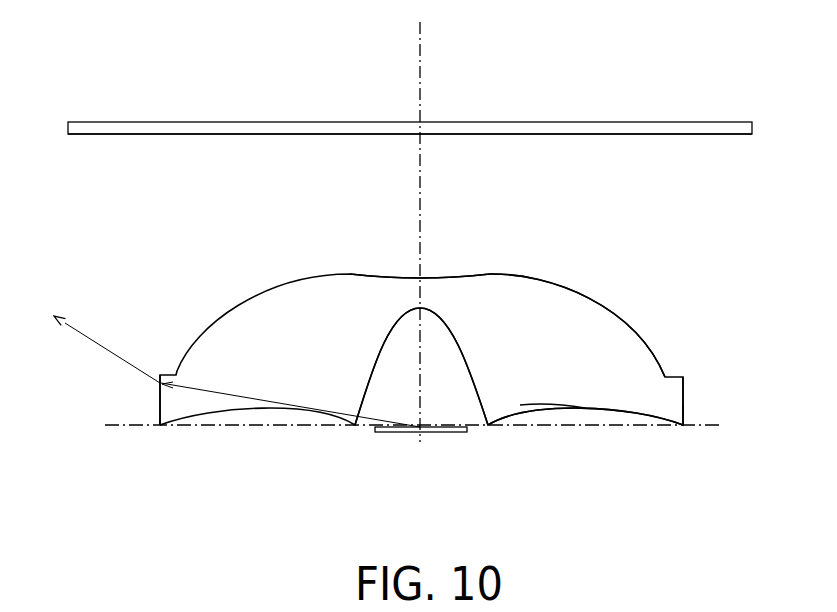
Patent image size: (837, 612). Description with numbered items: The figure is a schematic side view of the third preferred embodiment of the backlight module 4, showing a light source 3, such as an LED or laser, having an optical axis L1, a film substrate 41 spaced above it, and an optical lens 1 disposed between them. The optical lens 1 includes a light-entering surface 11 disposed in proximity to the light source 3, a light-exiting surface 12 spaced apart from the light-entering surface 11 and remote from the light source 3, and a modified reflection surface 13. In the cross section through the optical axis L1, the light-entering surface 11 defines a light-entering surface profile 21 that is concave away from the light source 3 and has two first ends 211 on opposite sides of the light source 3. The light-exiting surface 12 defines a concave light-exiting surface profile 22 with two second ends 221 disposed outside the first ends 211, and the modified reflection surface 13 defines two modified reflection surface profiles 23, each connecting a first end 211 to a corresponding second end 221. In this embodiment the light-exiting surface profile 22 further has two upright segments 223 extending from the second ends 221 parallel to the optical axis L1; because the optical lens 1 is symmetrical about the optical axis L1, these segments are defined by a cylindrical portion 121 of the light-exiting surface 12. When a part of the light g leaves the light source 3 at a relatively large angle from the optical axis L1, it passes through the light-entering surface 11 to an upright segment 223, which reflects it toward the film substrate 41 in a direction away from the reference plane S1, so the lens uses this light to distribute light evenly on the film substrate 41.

The optical lens 1 is at (672, 240).
The light-entering surface 11 is at (455, 373).
The light-exiting surface 12 is at (558, 278).
The cylindrical portion 121 is at (693, 413).
The modified reflection surface 13 is at (555, 413).
The light-entering surface profile 21 is at (472, 372).
The first ends 211 is at (355, 424).
The light-exiting surface profile 22 is at (583, 293).
The second ends 221 is at (163, 425).
The upright segments 223 is at (160, 403).
The modified reflection surface profiles 23 is at (627, 415).
The light source 3 is at (385, 432).
The backlight module 4 is at (80, 100).
The film substrate 41 is at (123, 122).
The optical axis L1 is at (421, 54).
The reference plane S1 is at (122, 425).
The part of the light g is at (122, 357).